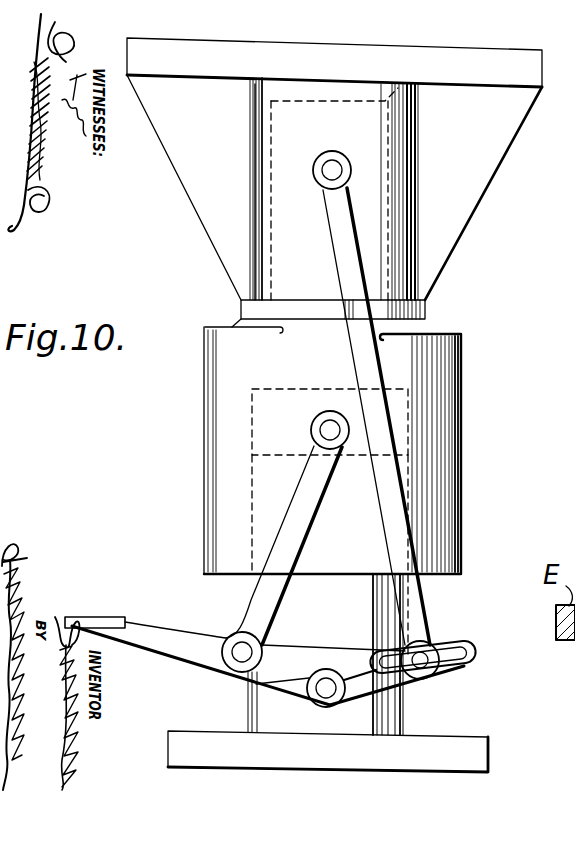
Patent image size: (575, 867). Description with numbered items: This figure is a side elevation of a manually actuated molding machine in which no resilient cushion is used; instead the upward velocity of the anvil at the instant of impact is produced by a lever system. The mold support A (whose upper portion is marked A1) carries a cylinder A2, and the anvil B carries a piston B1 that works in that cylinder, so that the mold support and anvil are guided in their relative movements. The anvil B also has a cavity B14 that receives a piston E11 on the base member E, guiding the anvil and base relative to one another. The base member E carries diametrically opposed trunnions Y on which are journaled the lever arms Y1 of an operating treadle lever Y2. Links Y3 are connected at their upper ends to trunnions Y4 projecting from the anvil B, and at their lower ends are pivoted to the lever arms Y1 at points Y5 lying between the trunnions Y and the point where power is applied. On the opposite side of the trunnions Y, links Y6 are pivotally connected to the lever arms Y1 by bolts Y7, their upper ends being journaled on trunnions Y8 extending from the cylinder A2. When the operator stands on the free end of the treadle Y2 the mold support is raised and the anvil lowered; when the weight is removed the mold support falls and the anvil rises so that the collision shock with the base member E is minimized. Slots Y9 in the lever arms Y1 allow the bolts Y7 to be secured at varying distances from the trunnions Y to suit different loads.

The mold support A is at (334, 197).
The hopper top flange A1 is at (430, 78).
The cylinder A2 is at (258, 156).
The anvil B is at (315, 446).
The piston B1 is at (400, 90).
The cavity B14 is at (253, 428).
The trunnions Y is at (327, 686).
The lever arms Y1 is at (271, 658).
The operating treadle lever Y2 is at (96, 620).
The links Y3 is at (285, 520).
The trunnions Y4 is at (330, 430).
The pivot points Y5 is at (240, 655).
The links Y6 is at (383, 433).
The bolts Y7 is at (428, 646).
The trunnions Y8 is at (342, 170).
The slots Y9 is at (473, 661).
The base member E is at (489, 757).
The piston E11 is at (408, 714).